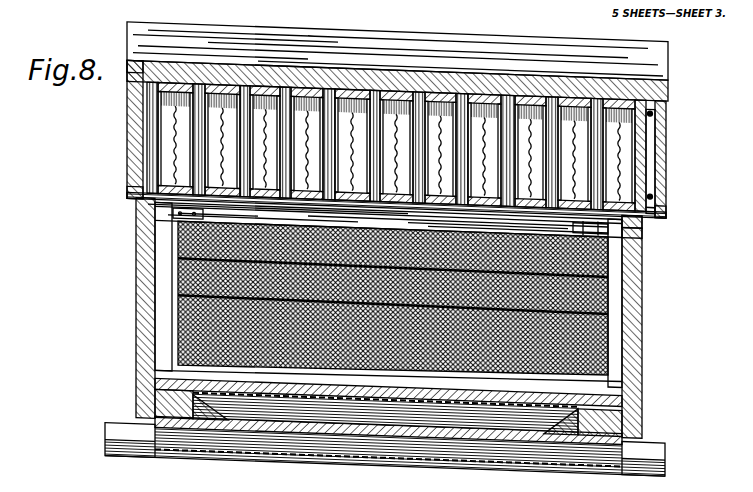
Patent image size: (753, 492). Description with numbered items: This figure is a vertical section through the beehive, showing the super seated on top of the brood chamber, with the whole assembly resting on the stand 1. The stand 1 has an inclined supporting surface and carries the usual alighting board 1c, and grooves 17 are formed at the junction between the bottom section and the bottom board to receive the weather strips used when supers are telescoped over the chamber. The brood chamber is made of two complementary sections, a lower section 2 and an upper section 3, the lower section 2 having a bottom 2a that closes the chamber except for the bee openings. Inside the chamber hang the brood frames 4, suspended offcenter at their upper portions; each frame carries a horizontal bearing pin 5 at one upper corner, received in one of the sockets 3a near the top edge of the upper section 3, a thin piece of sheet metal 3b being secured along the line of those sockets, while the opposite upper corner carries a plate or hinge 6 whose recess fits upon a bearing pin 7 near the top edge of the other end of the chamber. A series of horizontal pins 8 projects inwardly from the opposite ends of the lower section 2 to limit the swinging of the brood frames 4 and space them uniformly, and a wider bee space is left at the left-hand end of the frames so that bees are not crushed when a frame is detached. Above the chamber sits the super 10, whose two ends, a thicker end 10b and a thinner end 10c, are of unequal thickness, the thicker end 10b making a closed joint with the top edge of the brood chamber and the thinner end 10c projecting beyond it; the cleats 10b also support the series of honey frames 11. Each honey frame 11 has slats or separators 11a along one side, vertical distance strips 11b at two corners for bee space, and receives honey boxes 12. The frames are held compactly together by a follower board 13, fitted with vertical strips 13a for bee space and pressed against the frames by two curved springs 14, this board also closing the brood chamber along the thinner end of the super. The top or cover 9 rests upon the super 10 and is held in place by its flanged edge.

The stand 1 is at (127, 397).
The alighting board 1c is at (680, 440).
The lower section of brood chamber 2 is at (128, 352).
The bottom 2a is at (372, 390).
The upper section of brood chamber 3 is at (130, 248).
The sockets 3a is at (633, 226).
The sheet metal piece 3b is at (636, 242).
The brood frames 4 is at (163, 298).
The bearing pin 5 is at (570, 218).
The plate or hinge 6 is at (195, 204).
The bearing pin 7 is at (150, 208).
The horizontal pins 8 is at (130, 369).
The top or cover 9 is at (308, 62).
The super 10 is at (118, 161).
The thicker end of super 10b is at (688, 206).
The thinner end of super 10c is at (650, 195).
The honey frames 11 is at (435, 82).
The slats or separators 11a is at (236, 140).
The distance strips or cleats 11b is at (228, 78).
The honey boxes 12 is at (395, 83).
The follower plate or board 13 is at (648, 120).
The vertical strips or cleats 13a is at (644, 142).
The curved springs 14 is at (650, 186).
The grooves 17 is at (127, 377).